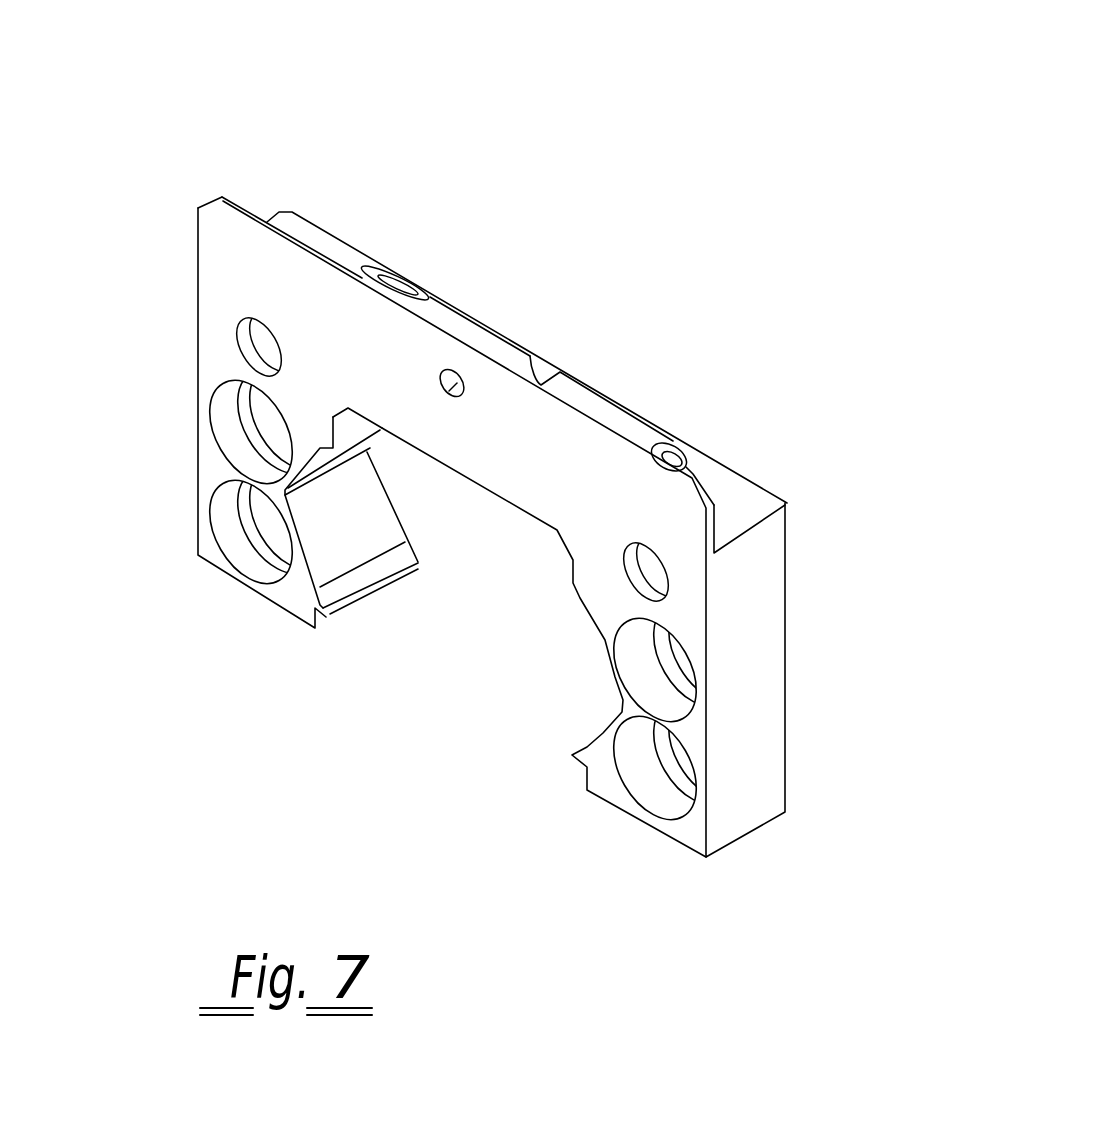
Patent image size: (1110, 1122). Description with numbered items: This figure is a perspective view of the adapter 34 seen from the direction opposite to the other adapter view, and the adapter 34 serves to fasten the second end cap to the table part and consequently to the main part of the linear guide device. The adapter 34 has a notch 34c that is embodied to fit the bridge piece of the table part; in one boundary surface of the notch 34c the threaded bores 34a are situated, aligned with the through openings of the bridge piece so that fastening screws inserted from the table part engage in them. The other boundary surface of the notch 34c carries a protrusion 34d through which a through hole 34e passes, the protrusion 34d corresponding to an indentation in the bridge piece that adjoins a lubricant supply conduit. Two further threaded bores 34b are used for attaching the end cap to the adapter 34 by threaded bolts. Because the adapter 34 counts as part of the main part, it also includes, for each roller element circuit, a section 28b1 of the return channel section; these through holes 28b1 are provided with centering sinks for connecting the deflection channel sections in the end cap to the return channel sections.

The adapter 34 is at (690, 123).
The threaded bores 34a is at (378, 272).
The threaded bores 34b is at (238, 338).
The notch 34c is at (731, 510).
The protrusion 34d is at (486, 330).
The through hole 34e is at (447, 397).
The section of the return channel section 28b1 is at (238, 429).